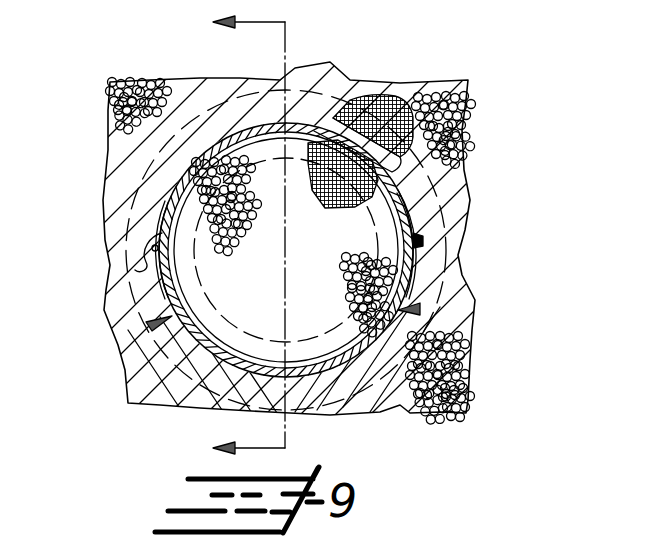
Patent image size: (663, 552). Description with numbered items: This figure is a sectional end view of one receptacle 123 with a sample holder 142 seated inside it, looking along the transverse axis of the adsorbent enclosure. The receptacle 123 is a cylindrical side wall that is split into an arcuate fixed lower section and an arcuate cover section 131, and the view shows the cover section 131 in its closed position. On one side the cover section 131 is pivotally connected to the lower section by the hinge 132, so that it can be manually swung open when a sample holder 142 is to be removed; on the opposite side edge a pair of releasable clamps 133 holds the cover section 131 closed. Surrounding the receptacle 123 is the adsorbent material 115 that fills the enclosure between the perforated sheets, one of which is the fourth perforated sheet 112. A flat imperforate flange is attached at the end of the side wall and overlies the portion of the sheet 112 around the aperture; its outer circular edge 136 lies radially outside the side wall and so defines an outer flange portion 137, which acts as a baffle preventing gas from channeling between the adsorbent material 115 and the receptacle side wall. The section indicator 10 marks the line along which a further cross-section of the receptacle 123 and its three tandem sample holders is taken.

The section line 10- 10 is at (224, 235).
The fourth perforated sheet 112 is at (458, 82).
The adsorbent material 115 is at (470, 142).
The receptacle 123 is at (118, 336).
The cover section 131 is at (291, 122).
The hinge 132 is at (422, 236).
The releasable clamps 133 is at (128, 244).
The outer circular edge 136 is at (388, 96).
The outer flange portion 137 is at (375, 98).
The sample holder 142 is at (420, 308).